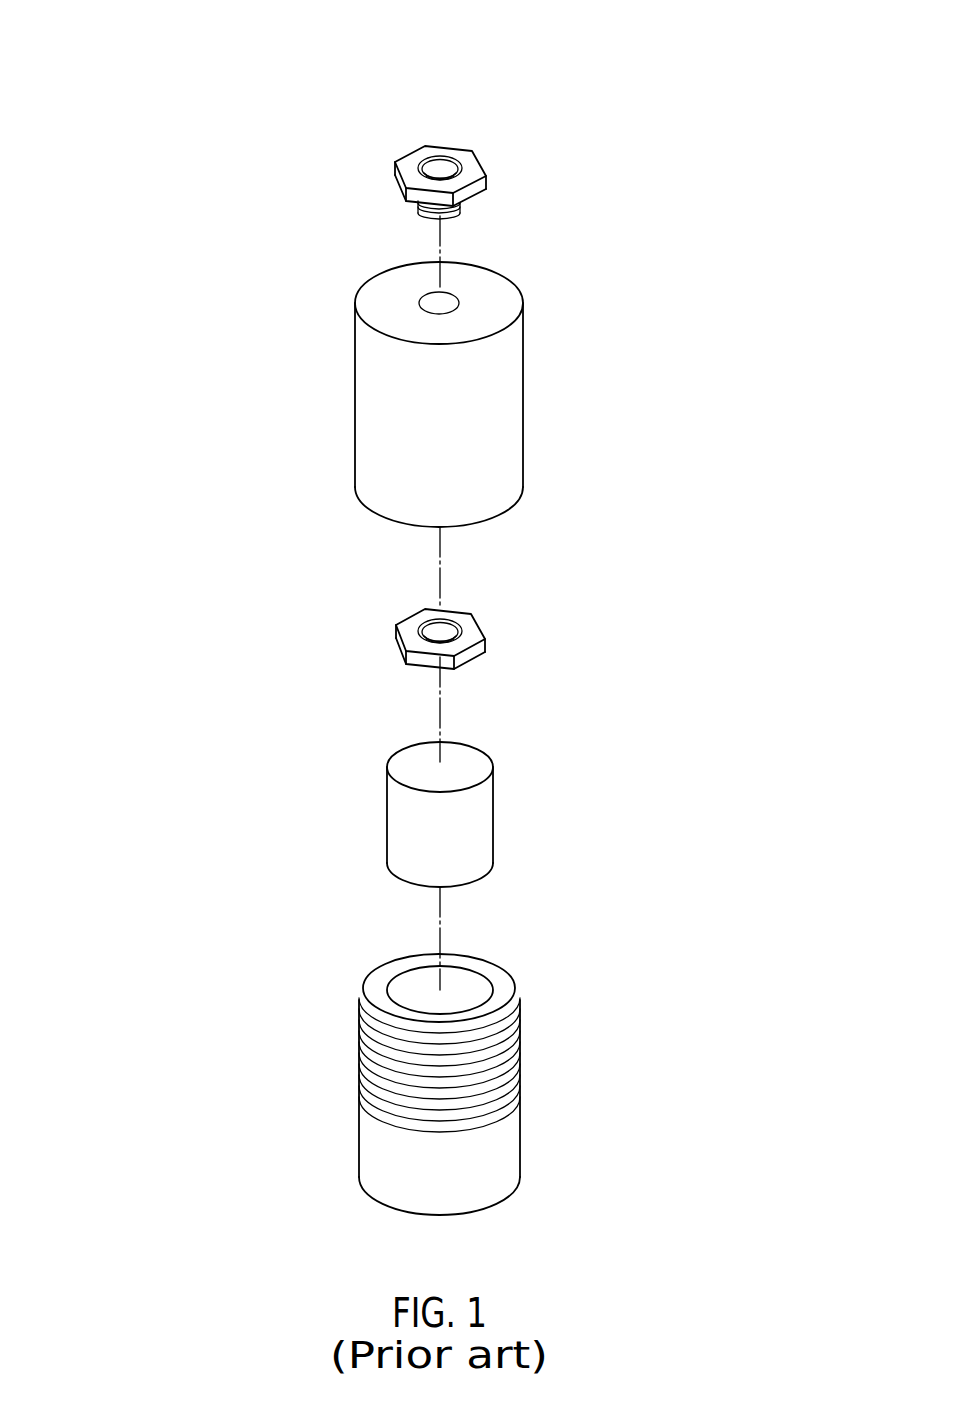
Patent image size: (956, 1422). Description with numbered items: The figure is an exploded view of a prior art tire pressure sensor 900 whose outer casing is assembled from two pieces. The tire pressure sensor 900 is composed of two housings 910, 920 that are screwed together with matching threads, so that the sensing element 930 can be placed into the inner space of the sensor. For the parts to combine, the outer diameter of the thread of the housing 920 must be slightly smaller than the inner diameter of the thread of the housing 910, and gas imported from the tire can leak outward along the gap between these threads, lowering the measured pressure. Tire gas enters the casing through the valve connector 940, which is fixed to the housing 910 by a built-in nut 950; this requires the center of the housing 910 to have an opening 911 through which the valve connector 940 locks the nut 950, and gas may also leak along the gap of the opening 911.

The tire pressure sensor 900 is at (57, 32).
The valve connector 940 is at (470, 162).
The opening 911 is at (450, 303).
The housing 910 is at (549, 390).
The nut 950 is at (470, 625).
The sensing element 930 is at (480, 828).
The housing 920 is at (508, 1140).